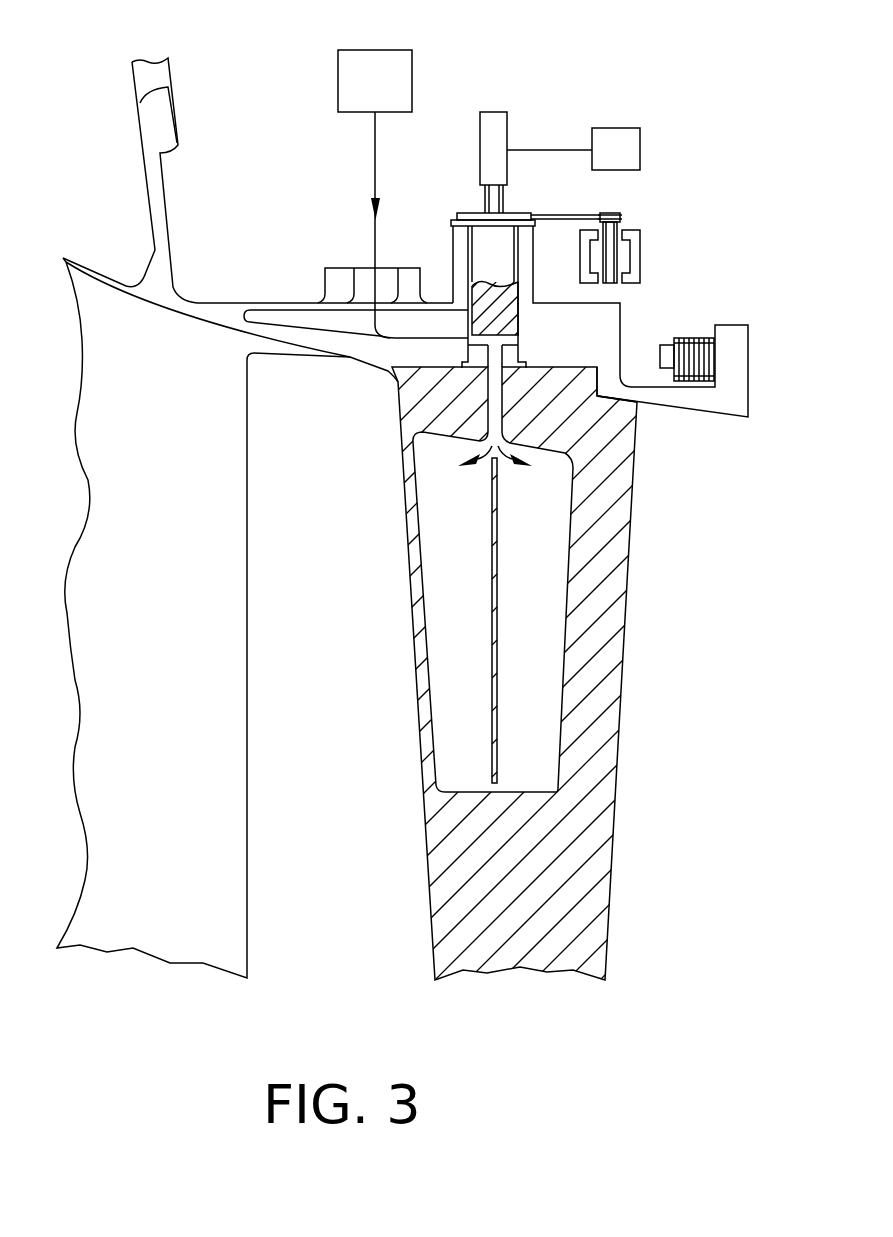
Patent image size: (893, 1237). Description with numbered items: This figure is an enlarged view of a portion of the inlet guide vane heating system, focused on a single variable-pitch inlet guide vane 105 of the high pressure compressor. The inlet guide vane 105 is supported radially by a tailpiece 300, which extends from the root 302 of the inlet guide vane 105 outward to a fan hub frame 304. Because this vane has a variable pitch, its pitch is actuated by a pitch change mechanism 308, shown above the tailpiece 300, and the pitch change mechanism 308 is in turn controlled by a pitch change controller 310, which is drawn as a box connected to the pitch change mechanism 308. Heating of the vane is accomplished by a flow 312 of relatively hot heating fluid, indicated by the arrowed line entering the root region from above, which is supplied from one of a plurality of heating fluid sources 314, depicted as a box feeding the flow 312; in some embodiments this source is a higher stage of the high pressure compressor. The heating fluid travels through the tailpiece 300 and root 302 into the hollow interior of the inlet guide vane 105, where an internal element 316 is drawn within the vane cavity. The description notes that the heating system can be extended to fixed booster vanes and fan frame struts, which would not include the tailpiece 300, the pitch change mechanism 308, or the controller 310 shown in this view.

The inlet guide vane 105 is at (410, 567).
The tailpiece 300 is at (520, 318).
The root 302 is at (598, 393).
The fan hub frame 304 is at (237, 303).
The pitch change mechanism 308 is at (493, 110).
The pitch change controller 310 is at (617, 128).
The flow of heating fluid 312 is at (375, 147).
The heating fluid source 314 is at (377, 50).
The insert element 316 is at (493, 720).